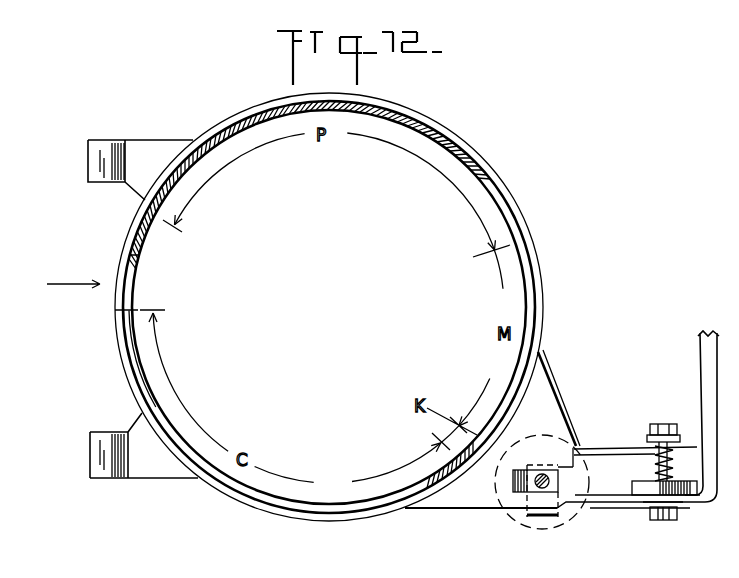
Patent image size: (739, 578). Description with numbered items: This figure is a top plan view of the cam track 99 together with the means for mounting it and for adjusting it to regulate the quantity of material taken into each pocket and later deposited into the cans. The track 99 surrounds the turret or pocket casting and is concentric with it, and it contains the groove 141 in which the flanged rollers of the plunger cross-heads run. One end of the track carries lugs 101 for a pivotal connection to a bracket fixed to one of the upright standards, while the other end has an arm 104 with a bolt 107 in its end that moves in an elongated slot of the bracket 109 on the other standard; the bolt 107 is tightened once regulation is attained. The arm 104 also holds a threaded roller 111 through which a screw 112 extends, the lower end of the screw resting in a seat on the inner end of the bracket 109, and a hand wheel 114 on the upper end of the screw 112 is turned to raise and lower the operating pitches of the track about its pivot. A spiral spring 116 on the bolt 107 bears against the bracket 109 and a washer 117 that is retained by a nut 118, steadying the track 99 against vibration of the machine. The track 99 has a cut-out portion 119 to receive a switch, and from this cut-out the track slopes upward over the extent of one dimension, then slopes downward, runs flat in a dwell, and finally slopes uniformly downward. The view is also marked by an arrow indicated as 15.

The hose clamp assembly 15 is at (73, 275).
The track 99 is at (350, 520).
The lugs 101 is at (159, 140).
The arm 104 is at (592, 452).
The bolt 107 is at (656, 520).
The bracket 109 is at (605, 495).
The threaded roller 111 is at (541, 518).
The screw 112 is at (541, 474).
The hand wheel 114 is at (574, 522).
The spiral spring 116 is at (655, 460).
The washer 117 is at (650, 438).
The nut 118 is at (660, 426).
The cut-out portion 119 is at (131, 283).
The groove 141 is at (282, 512).